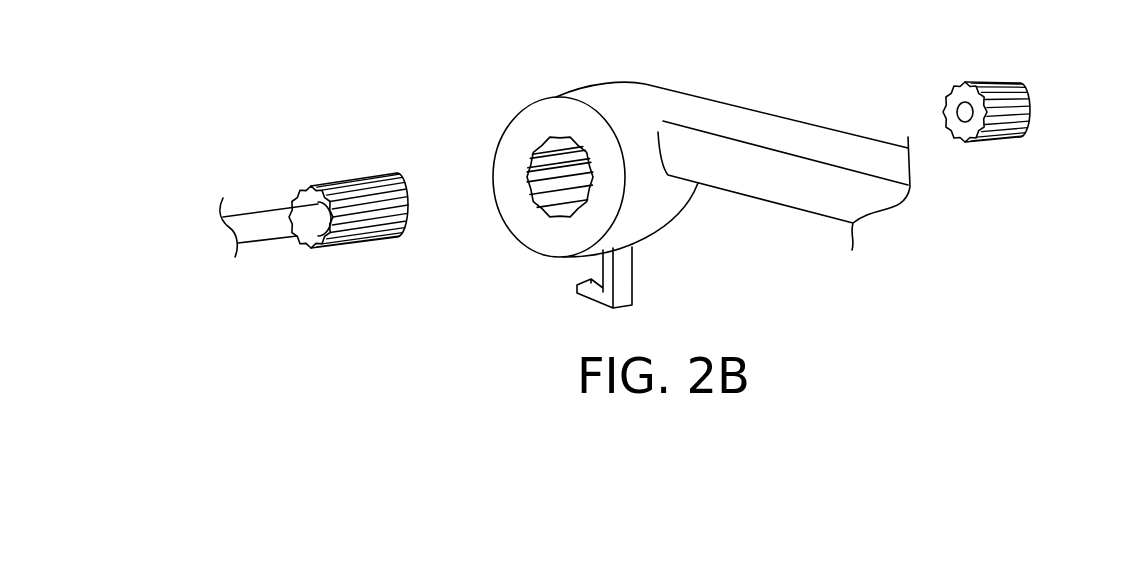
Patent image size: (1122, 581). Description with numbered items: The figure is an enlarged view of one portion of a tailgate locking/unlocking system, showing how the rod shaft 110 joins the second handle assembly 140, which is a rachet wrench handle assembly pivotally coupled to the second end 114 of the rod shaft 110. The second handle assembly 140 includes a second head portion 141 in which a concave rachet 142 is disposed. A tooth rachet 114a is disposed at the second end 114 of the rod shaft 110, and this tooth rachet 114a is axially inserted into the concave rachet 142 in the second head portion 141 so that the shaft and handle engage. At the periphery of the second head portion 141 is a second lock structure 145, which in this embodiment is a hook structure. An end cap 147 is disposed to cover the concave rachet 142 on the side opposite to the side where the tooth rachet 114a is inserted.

The rod shaft 110 is at (255, 217).
The second end 114 is at (343, 171).
The tooth rachet 114a is at (413, 197).
The second handle assembly 140 is at (670, 159).
The second head portion 141 is at (623, 103).
The concave rachet 142 is at (535, 173).
The second lock structure 145 is at (622, 292).
The end cap 147 is at (1008, 78).